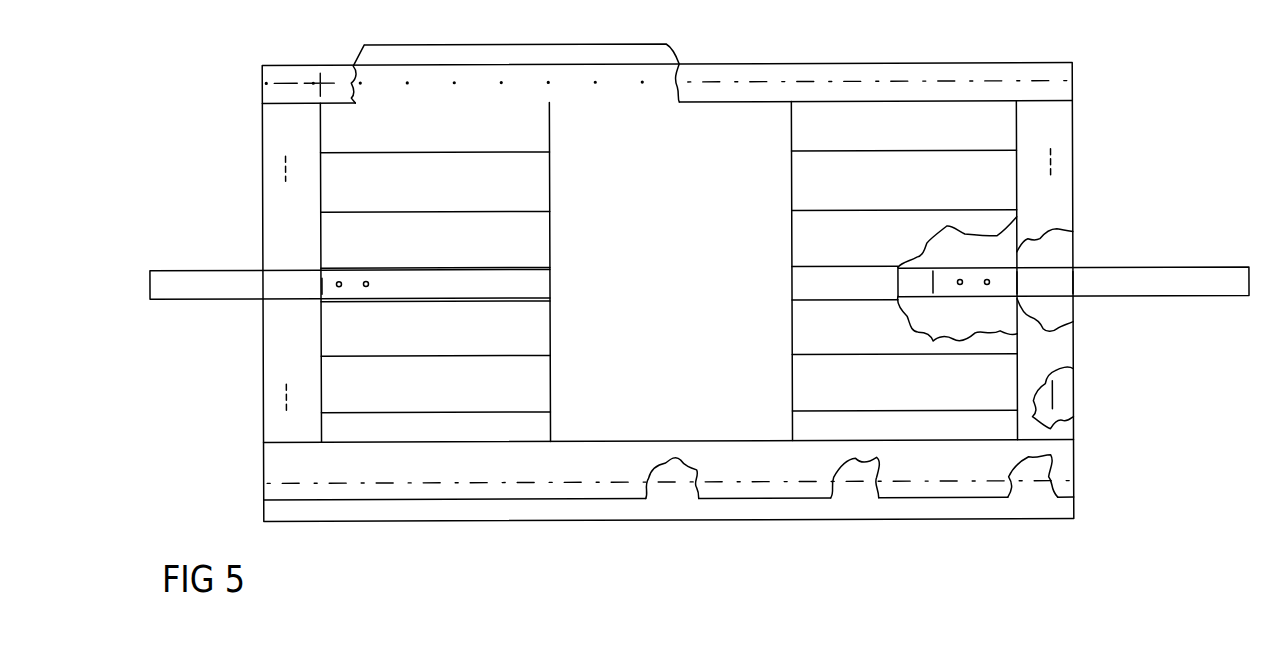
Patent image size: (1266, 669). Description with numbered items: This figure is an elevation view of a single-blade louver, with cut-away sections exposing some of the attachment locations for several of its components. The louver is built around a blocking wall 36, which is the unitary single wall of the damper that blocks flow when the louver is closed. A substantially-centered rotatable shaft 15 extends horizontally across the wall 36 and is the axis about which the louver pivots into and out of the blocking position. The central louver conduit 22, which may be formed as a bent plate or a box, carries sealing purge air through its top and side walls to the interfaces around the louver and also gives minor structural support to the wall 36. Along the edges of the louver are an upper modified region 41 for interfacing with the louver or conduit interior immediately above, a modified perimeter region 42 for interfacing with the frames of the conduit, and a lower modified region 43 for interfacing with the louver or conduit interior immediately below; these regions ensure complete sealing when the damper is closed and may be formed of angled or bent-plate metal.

The rotatable shaft 15 is at (193, 270).
The louver conduit 22 is at (713, 122).
The blocking wall 36 is at (1008, 195).
The upper modified region 41 is at (920, 64).
The modified perimeter region 42 is at (1063, 122).
The lower modified region 43 is at (268, 462).